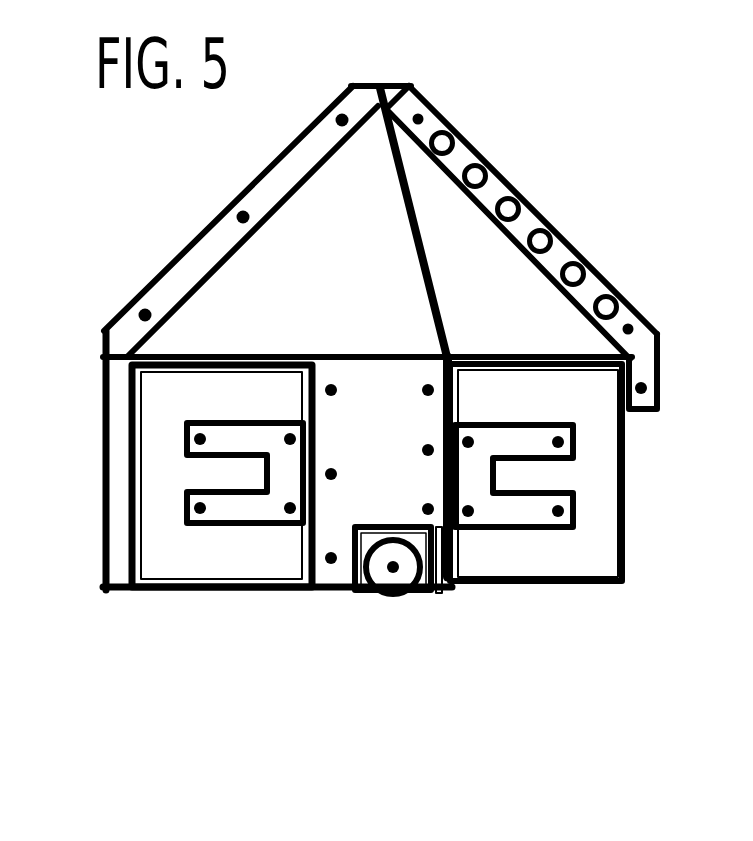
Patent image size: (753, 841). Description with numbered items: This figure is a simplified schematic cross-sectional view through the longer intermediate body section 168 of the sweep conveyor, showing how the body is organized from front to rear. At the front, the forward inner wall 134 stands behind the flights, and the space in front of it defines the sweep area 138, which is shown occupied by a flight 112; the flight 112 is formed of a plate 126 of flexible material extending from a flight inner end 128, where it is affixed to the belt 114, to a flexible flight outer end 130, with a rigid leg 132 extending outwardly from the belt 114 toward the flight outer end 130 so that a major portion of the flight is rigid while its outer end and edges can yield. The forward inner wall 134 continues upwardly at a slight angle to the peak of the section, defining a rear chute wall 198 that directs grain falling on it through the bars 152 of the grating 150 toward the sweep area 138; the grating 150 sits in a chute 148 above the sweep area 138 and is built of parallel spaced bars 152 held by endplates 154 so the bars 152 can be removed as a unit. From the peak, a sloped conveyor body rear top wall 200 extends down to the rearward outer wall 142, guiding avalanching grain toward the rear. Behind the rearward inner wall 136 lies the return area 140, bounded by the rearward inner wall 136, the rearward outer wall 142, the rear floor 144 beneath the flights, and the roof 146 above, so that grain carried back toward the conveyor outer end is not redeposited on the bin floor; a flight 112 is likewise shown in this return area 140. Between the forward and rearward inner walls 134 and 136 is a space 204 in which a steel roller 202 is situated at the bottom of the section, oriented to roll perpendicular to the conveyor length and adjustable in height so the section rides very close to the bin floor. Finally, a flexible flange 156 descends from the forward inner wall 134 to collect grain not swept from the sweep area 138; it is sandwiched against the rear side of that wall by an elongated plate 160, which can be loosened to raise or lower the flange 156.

The flight 112 is at (207, 557).
The belt 114 is at (287, 482).
The plate 126 is at (183, 553).
The flight inner end 128 is at (305, 553).
The flight outer end 130 is at (127, 534).
The rigid leg 132 is at (253, 508).
The forward inner wall 134 is at (553, 222).
The rearward inner wall 136 is at (320, 418).
The sweep area 138 is at (593, 468).
The return area 140 is at (157, 457).
The rearward outer wall 142 is at (143, 430).
The rear floor 144 is at (215, 575).
The roof 146 is at (200, 372).
The chute 148 is at (447, 413).
The grating 150 is at (460, 157).
The bar 152 is at (448, 123).
The endplate 154 is at (593, 290).
The flange 156 is at (445, 584).
The elongated plate 160 is at (420, 550).
The longer intermediate body section 168 is at (190, 244).
The rear chute wall 198 is at (475, 238).
The conveyor body rear top wall 200 is at (290, 196).
The roller 202 is at (387, 580).
The space 204 is at (367, 495).